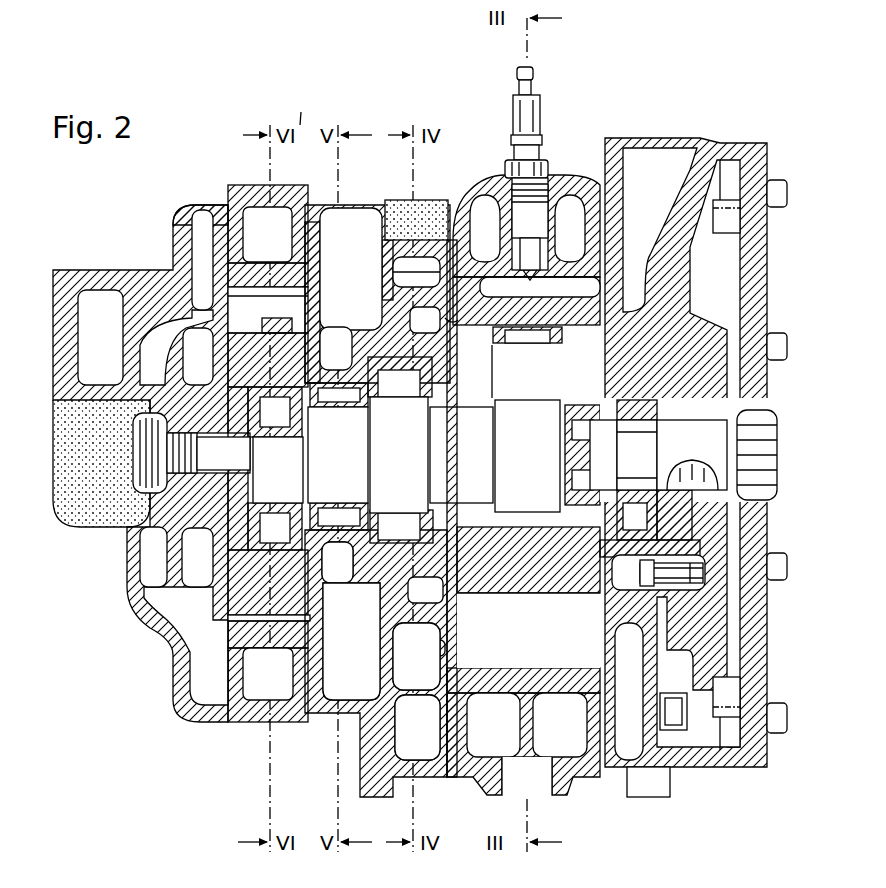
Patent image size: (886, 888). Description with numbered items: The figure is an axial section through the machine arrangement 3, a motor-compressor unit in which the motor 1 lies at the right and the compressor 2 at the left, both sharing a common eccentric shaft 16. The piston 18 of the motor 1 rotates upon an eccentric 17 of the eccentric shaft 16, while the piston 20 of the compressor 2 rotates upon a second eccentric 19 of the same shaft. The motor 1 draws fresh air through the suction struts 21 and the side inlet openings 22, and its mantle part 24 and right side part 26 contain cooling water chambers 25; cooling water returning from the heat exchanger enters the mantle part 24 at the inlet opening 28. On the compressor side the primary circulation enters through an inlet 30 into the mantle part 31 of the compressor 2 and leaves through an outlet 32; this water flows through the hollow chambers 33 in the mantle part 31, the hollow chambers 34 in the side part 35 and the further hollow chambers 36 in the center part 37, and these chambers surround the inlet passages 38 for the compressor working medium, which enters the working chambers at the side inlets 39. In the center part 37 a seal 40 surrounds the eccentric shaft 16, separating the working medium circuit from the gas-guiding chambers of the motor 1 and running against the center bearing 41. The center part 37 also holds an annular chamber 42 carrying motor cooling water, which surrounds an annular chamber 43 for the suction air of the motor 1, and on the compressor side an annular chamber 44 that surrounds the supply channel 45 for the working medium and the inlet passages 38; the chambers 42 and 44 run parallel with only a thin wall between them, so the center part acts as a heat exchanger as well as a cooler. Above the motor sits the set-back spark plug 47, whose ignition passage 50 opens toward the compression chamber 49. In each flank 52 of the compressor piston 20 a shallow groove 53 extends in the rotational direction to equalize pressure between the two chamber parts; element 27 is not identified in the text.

The motor 1 is at (475, 794).
The compressor 2 is at (231, 733).
The machine arrangement 3 is at (302, 107).
The eccentric shaft 16 is at (461, 455).
The eccentric 17 is at (546, 419).
The piston 18 is at (526, 596).
The eccentric 19 is at (218, 458).
The piston 20 is at (312, 619).
The suction struts 21 is at (605, 158).
The side inlet openings 22 is at (474, 371).
The mantle part 24 is at (457, 205).
The cooling water chambers 25 is at (430, 200).
The right side part 26 is at (603, 628).
The passage 27 is at (642, 668).
The inlet opening 28 is at (540, 796).
The inlet 30 is at (258, 722).
The mantle part 31 is at (301, 186).
The outlet 32 is at (257, 186).
The hollow chambers 33 is at (313, 222).
The hollow chambers 34 is at (190, 236).
The side part 35 is at (188, 205).
The hollow chambers 36 is at (387, 200).
The center part 37 is at (361, 205).
The inlet passages 38 is at (197, 330).
The side inlets 39 is at (226, 334).
The seal 40 is at (340, 408).
The center bearing 41 is at (400, 405).
The annular chamber 42 is at (395, 271).
The annular chamber 43 is at (444, 330).
The annular chamber 44 is at (445, 650).
The supply channel 45 is at (336, 328).
The spark plug 47 is at (540, 116).
The compression chamber 49 is at (485, 228).
The ignition passage 50 is at (570, 228).
The piston flank 52 is at (286, 345).
The groove 53 is at (266, 330).